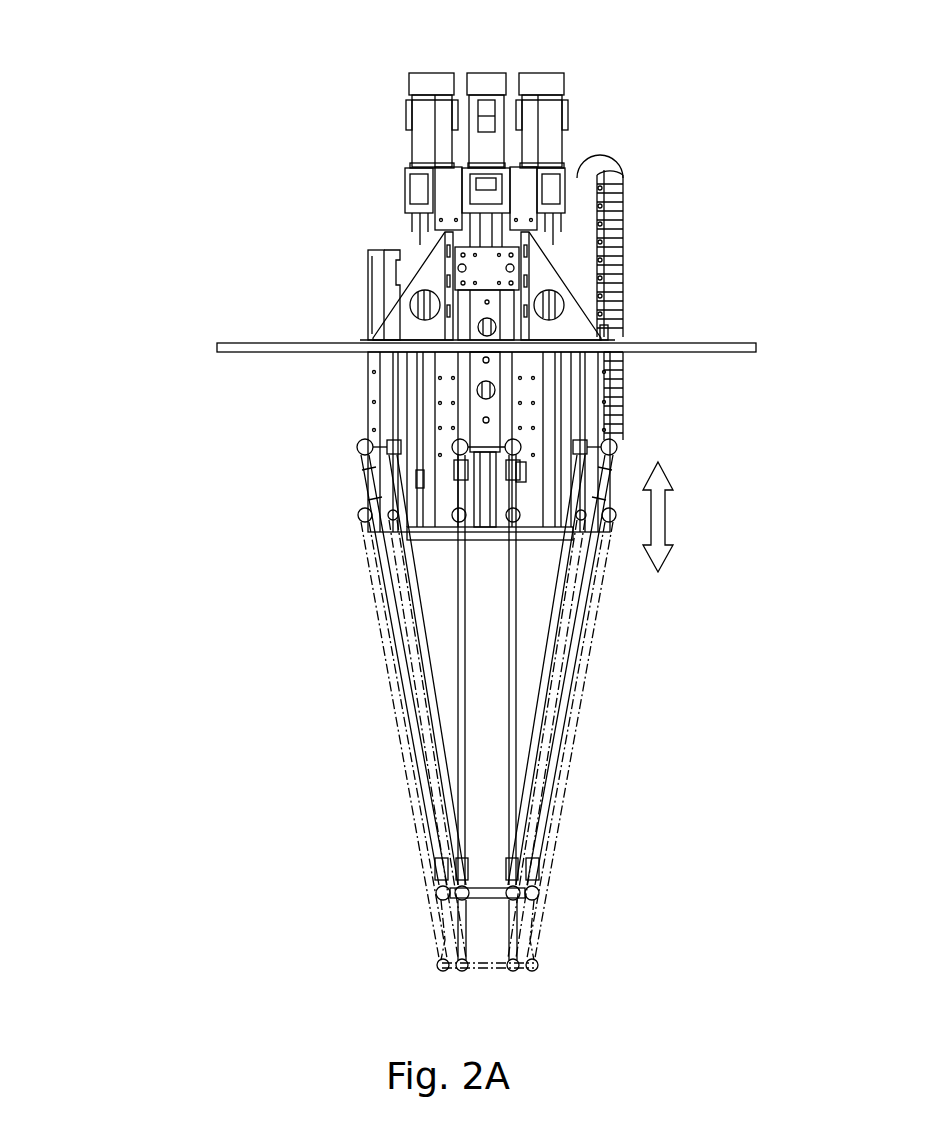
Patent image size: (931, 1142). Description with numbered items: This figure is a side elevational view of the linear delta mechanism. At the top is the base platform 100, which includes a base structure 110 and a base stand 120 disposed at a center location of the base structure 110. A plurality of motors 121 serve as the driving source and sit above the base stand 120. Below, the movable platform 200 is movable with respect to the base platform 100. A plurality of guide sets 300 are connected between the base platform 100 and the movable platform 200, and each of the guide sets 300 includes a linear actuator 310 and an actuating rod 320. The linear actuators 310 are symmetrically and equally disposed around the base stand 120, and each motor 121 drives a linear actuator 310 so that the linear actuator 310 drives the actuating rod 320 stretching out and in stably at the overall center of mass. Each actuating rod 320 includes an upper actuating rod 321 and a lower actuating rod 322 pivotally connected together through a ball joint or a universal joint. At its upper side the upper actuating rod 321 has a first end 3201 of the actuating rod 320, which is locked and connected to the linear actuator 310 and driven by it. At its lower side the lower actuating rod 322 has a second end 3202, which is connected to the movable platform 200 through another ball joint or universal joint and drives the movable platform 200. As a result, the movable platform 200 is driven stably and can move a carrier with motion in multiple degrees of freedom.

The base platform 100 is at (755, 225).
The base structure 110 is at (733, 343).
The base stand 120 is at (527, 192).
The motors 121 is at (425, 77).
The movable platform 200 is at (493, 893).
The guide sets 300 is at (155, 270).
The linear actuator 310 is at (378, 230).
The first end 3201 is at (368, 272).
The actuating rod 320 is at (227, 400).
The upper actuating rod 321 is at (373, 383).
The lower actuating rod 322 is at (410, 698).
The second end 3202 is at (432, 895).